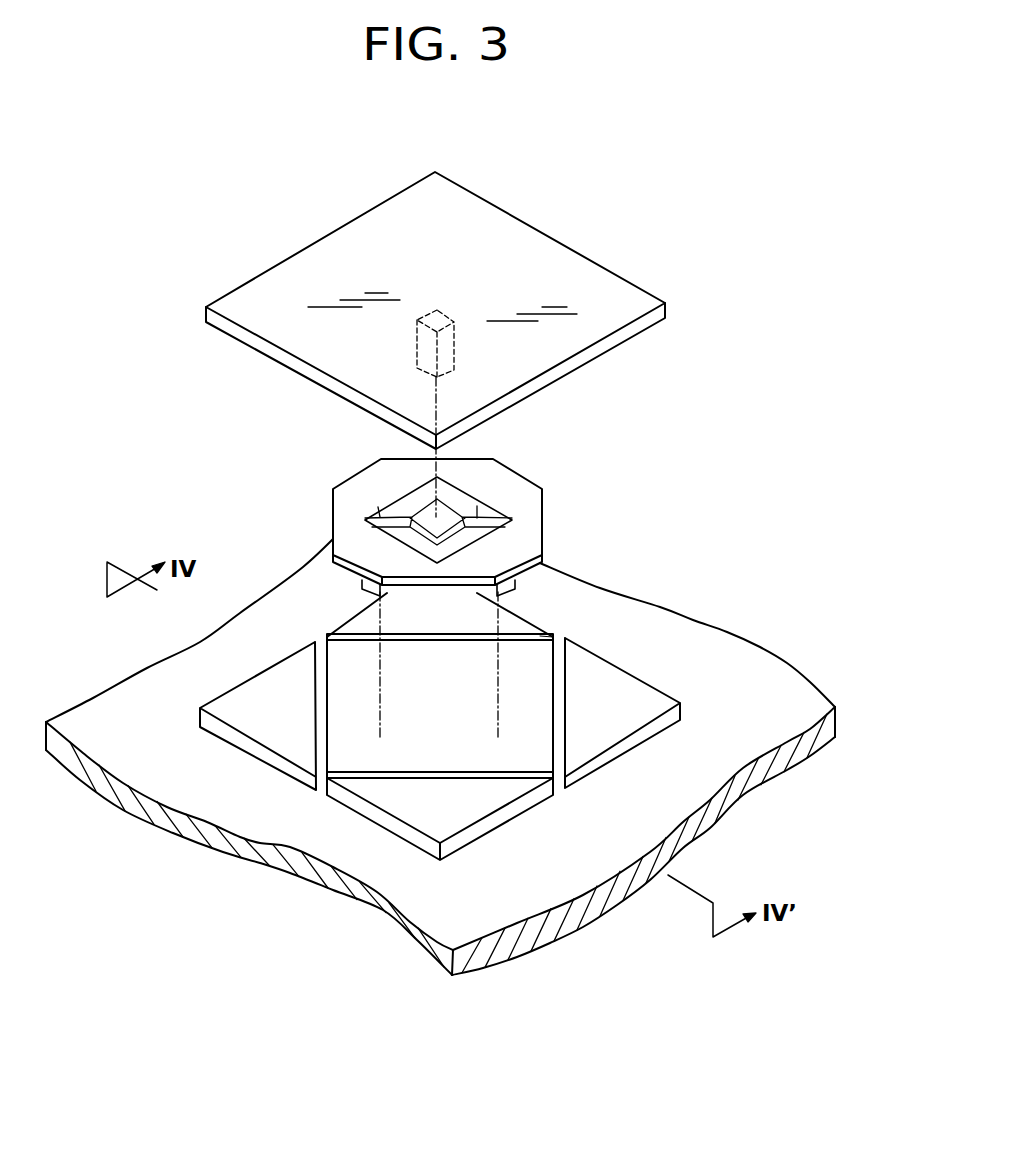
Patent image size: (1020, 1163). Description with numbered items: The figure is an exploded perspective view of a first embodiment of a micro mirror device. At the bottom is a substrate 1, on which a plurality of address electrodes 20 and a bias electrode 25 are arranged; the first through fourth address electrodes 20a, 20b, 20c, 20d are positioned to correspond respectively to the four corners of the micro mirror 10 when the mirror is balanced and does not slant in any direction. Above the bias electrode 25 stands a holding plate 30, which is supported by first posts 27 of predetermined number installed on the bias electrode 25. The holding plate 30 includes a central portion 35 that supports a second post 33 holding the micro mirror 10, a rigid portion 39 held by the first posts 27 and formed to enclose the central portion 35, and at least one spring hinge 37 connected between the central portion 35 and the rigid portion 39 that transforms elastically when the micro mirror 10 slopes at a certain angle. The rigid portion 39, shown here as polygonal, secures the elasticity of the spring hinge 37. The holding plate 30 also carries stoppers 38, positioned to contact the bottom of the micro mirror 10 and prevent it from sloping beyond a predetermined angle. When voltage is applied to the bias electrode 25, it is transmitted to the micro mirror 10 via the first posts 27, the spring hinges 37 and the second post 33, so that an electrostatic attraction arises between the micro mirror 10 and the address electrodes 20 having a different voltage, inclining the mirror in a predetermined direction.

The substrate 1 is at (748, 663).
The micro mirror 10 is at (530, 238).
The address electrodes 20 is at (438, 748).
The first address electrode 20a is at (260, 690).
The second address electrode 20b is at (400, 807).
The third address electrode 20c is at (632, 690).
The fourth address electrode 20d is at (350, 620).
The bias electrode 25 is at (333, 655).
The first posts 27 is at (625, 649).
The holding plate 30 is at (424, 501).
The second post 33 is at (420, 350).
The central portion 35 is at (452, 513).
The spring hinge 37 is at (385, 516).
The stoppers 38 is at (330, 563).
The rigid portion 39 is at (535, 511).